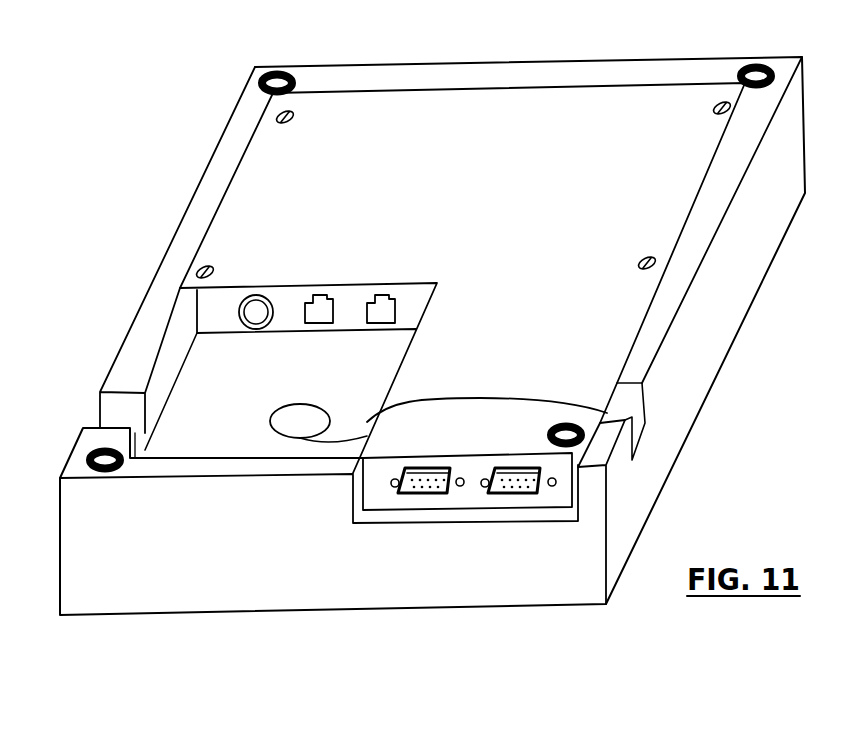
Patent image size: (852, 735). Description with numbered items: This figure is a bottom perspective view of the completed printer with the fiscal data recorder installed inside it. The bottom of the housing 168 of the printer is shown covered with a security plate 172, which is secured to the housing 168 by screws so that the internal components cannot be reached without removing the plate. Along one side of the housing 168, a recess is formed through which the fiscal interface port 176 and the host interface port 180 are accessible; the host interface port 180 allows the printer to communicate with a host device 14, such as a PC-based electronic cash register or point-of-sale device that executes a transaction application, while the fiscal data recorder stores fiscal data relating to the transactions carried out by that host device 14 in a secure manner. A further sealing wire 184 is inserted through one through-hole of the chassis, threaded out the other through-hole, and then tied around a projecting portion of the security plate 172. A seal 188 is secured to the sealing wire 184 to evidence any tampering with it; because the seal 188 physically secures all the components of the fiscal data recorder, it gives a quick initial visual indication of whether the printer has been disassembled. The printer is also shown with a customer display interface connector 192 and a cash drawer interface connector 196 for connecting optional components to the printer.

The host device 14 is at (165, 178).
The housing 168 is at (168, 300).
The security plate 172 is at (485, 212).
The fiscal interface port 176 is at (420, 495).
The host interface port 180 is at (531, 495).
The sealing wire 184 is at (400, 403).
The seal 188 is at (290, 425).
The customer display interface connector 192 is at (313, 296).
The cash drawer interface connector 196 is at (392, 296).